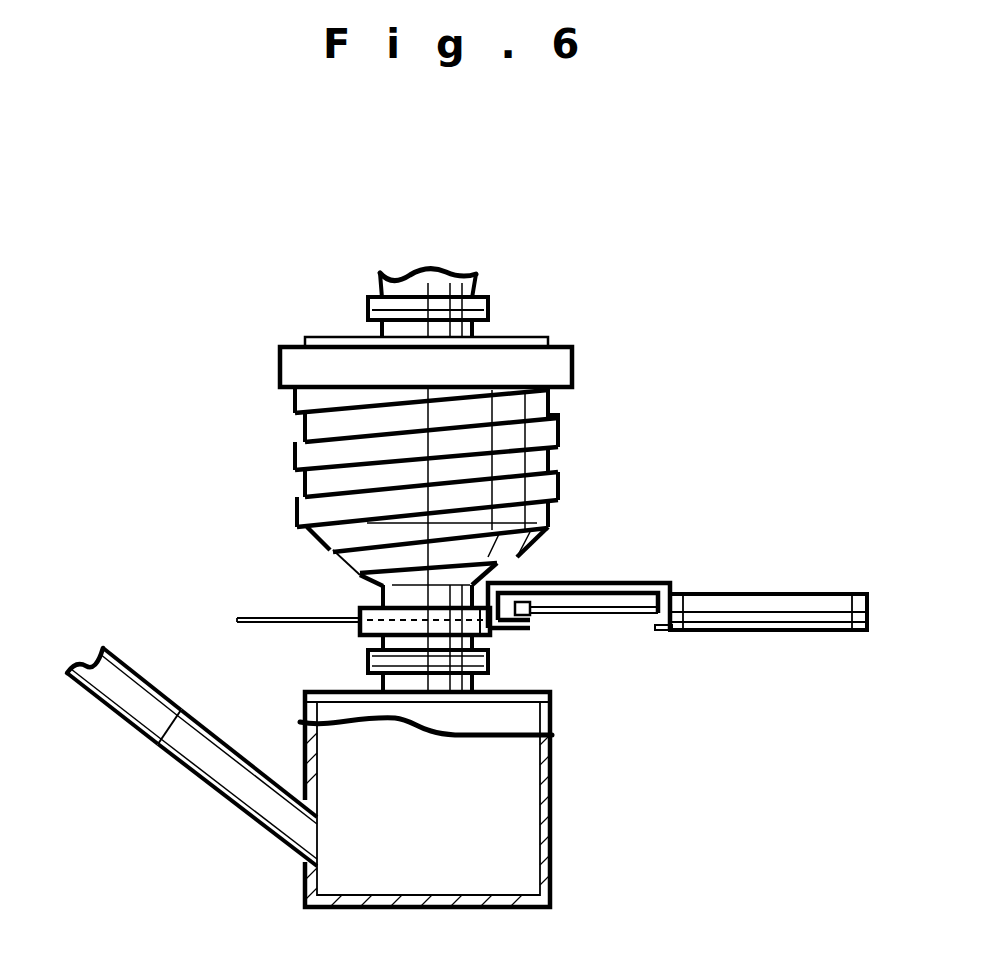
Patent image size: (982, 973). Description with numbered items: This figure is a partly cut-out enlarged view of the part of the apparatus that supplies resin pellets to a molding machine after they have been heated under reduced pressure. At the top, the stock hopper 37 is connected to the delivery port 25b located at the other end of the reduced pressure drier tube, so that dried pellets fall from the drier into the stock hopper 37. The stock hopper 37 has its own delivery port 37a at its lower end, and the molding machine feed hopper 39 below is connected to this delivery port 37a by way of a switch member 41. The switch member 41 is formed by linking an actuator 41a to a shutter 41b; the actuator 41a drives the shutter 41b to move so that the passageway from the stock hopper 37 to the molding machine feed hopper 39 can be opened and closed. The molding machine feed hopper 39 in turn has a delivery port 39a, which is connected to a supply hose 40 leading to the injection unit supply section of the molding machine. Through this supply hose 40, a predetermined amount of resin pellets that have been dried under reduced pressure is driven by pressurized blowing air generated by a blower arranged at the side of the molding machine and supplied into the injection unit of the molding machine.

The delivery port 25b is at (392, 287).
The stock hopper 37 is at (553, 457).
The delivery port 37a is at (397, 597).
The molding machine feed hopper 39 is at (552, 755).
The delivery port 39a is at (250, 790).
The supply hose 40 is at (127, 700).
The switch member 41 is at (652, 582).
The actuator 41a is at (747, 607).
The shutter 41b is at (255, 625).